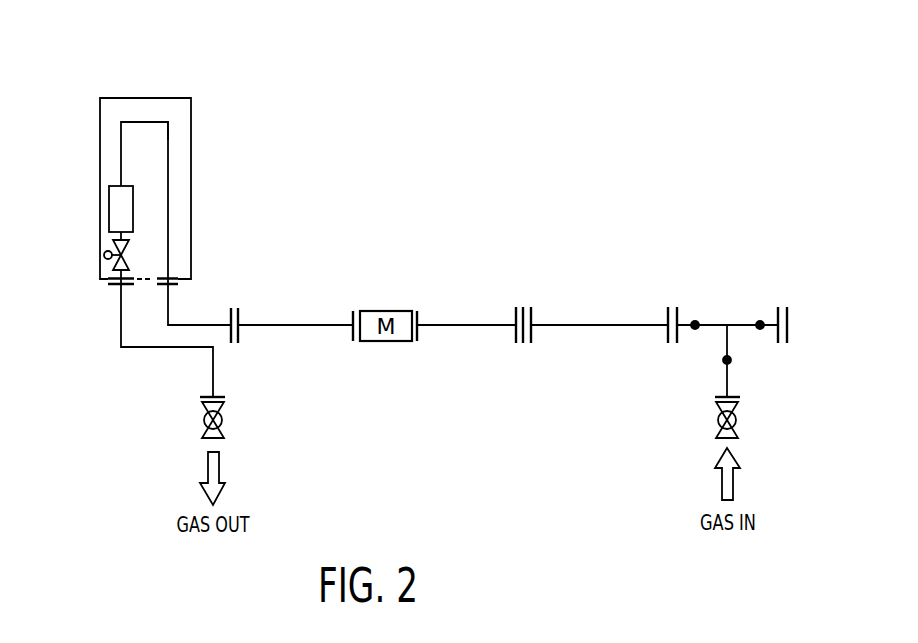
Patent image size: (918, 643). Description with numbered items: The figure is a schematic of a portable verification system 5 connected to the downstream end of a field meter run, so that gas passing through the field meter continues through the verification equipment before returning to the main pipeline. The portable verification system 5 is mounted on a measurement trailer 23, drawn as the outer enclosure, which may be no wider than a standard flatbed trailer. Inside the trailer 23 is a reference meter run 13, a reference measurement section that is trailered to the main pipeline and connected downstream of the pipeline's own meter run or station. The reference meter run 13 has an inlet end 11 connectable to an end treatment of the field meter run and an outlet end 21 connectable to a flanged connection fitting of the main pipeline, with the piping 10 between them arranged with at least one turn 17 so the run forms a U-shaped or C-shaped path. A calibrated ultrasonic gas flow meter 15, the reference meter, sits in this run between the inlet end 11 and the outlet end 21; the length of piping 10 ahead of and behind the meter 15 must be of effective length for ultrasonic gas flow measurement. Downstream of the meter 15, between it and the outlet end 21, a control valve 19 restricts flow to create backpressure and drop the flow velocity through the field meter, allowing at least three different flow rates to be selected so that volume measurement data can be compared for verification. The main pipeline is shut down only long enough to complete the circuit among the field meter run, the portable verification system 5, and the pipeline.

The portable verification system 5 is at (215, 163).
The piping 10 is at (168, 225).
The inlet end 11 is at (178, 285).
The reference meter run 13 is at (121, 135).
The calibrated ultrasonic gas flow meter 15 is at (109, 215).
The turn 17 is at (158, 120).
The control valve 19 is at (104, 258).
The outlet end 21 is at (113, 285).
The measurement trailer 23 is at (100, 170).